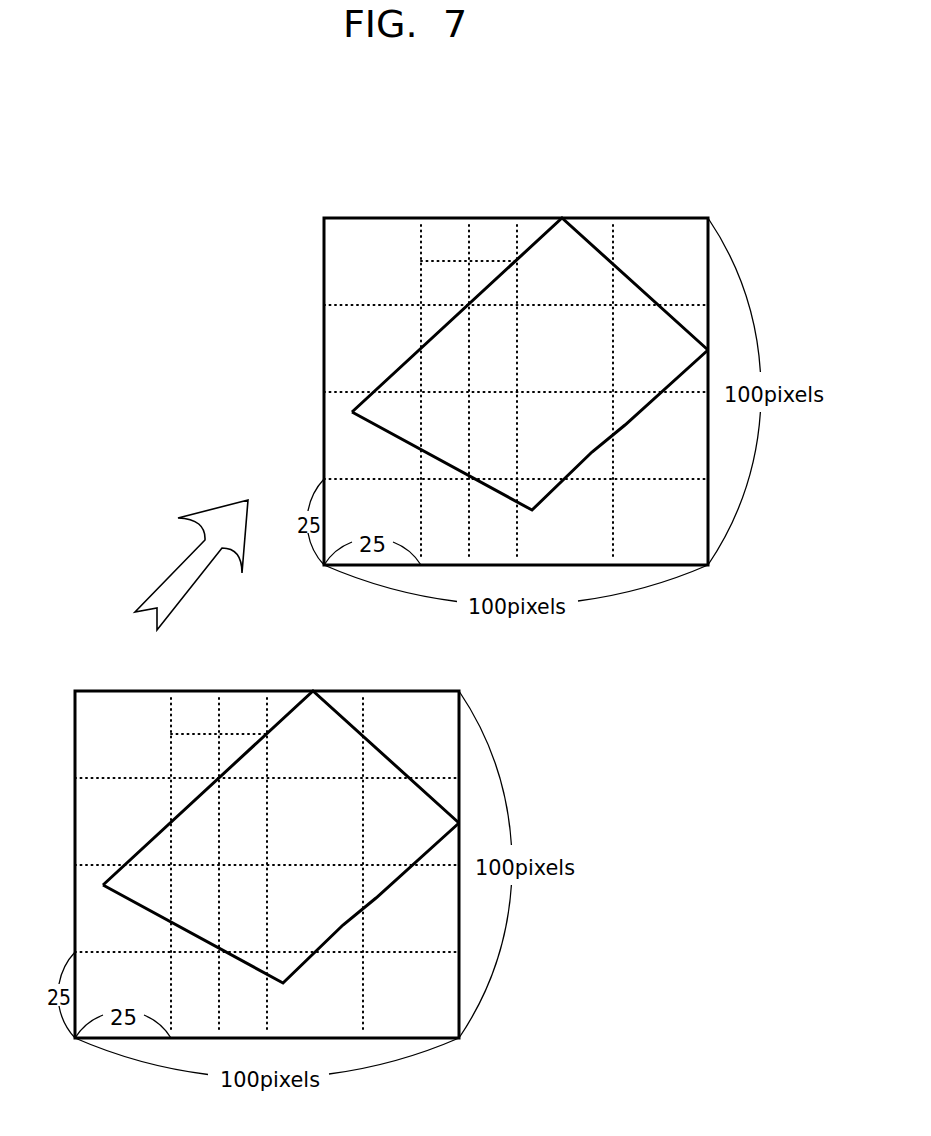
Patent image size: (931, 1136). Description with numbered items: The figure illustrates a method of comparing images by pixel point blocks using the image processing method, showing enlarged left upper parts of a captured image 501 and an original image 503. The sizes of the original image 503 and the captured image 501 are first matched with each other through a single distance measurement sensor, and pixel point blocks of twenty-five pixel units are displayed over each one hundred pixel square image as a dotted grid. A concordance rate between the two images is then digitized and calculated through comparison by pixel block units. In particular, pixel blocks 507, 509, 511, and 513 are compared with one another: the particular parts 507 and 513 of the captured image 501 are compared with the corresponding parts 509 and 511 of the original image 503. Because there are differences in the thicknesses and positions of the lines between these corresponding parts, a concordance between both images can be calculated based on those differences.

The captured image 501 is at (379, 217).
The original image 503 is at (130, 690).
The pixel block 507 is at (492, 275).
The pixel block 509 is at (250, 737).
The pixel block 511 is at (348, 932).
The pixel block 513 is at (590, 458).